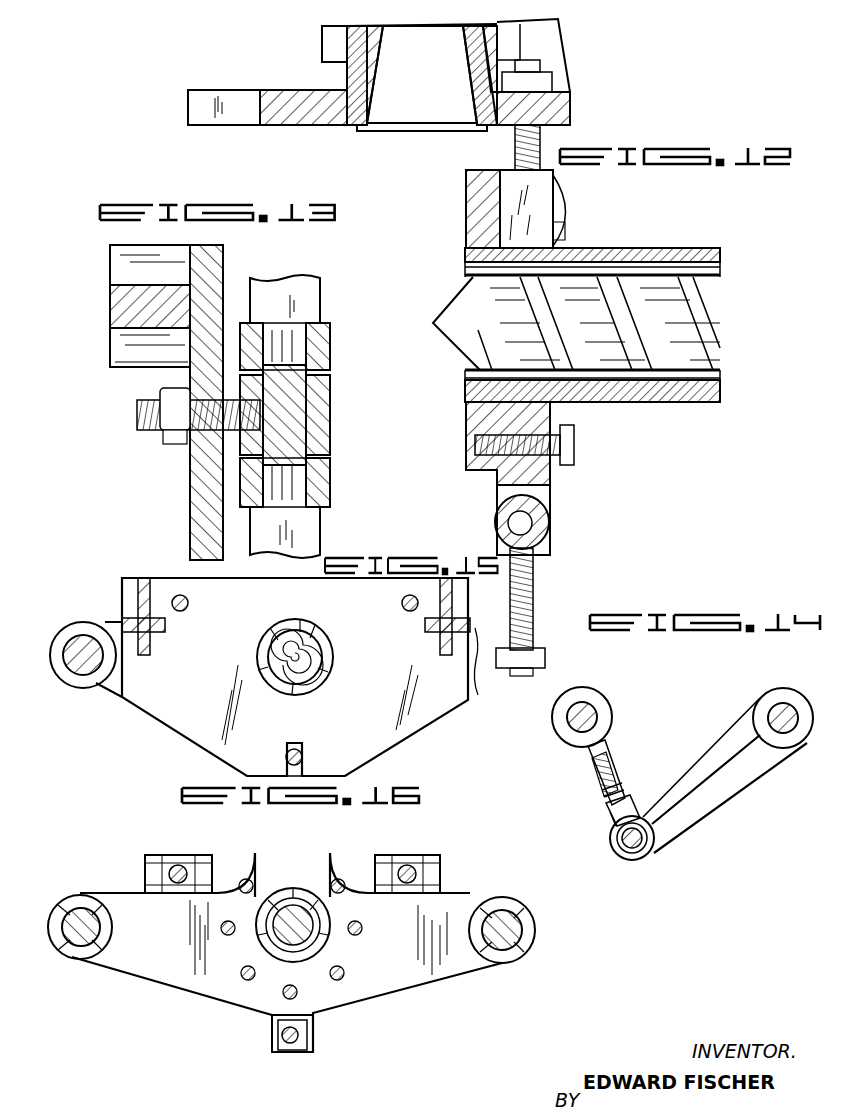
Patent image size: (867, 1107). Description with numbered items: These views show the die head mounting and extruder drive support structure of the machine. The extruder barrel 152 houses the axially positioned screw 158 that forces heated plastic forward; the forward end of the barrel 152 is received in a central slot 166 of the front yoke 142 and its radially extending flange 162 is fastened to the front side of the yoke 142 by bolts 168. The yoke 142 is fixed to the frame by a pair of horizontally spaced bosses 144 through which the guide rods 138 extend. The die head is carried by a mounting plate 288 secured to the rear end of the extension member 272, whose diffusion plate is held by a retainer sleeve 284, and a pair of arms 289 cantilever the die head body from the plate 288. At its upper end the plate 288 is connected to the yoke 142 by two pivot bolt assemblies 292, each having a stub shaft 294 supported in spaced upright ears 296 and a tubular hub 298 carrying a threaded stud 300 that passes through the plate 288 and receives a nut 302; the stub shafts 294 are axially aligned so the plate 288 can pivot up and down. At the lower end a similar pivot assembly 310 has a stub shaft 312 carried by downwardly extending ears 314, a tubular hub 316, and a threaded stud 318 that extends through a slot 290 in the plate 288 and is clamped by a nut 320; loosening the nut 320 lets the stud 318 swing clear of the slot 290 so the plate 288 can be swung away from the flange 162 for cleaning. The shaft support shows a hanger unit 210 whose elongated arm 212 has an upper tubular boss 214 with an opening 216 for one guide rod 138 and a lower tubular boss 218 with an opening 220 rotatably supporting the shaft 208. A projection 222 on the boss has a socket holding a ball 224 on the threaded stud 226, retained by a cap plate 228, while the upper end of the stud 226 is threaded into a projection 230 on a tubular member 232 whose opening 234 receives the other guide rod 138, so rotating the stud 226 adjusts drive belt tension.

In FIG. 15, the guide rods 138 is at (84, 662).
In FIG. 14, the guide rods 138 is at (573, 728).
In FIG. 16, the guide rods 138 is at (73, 925).
In FIG. 12, the front yoke 142 is at (540, 478).
In FIG. 16, the front yoke 142 is at (460, 968).
In FIG. 15, the bosses 144 is at (80, 630).
In FIG. 16, the bosses 144 is at (74, 952).
In FIG. 16, the barrel 152 is at (322, 935).
In FIG. 15, the screw 158 is at (283, 668).
In FIG. 12, the flange 162 is at (466, 212).
In FIG. 16, the central slot 166 is at (330, 838).
In FIG. 12, the bolts 168 is at (553, 240).
In FIG. 16, the bolts 168 is at (330, 885).
In FIG. 14, the shaft 208 is at (617, 839).
In FIG. 14, the hanger units 210 is at (771, 786).
In FIG. 14, the elongated arm 212 is at (708, 752).
In FIG. 14, the tubular boss 214 is at (771, 698).
In FIG. 14, the opening 216 is at (787, 708).
In FIG. 14, the tubular boss 218 is at (645, 860).
In FIG. 14, the opening 220 is at (635, 852).
In FIG. 14, the projection 222 is at (628, 808).
In FIG. 14, the ball 224 is at (612, 818).
In FIG. 14, the threaded stud 226 is at (613, 775).
In FIG. 14, the cap plate 228 is at (605, 792).
In FIG. 14, the projection 230 is at (603, 745).
In FIG. 14, the tubular member 232 is at (600, 700).
In FIG. 14, the opening 234 is at (585, 705).
In FIG. 15, the extension member 272 is at (333, 657).
In FIG. 12, the retainer sleeve 284 is at (368, 75).
In FIG. 15, the retainer sleeve 284 is at (312, 684).
In FIG. 12, the mounting plate 288 is at (570, 106).
In FIG. 13, the mounting plate 288 is at (212, 268).
In FIG. 15, the mounting plate 288 is at (405, 722).
In FIG. 13, the arms 289 is at (124, 275).
In FIG. 15, the arms 289 is at (152, 632).
In FIG. 12, the slot 290 is at (222, 122).
In FIG. 15, the slot 290 is at (298, 745).
In FIG. 13, the pivot bolt assemblies 292 is at (346, 407).
In FIG. 16, the pivot bolt assemblies 292 is at (184, 840).
In FIG. 13, the stub shaft 294 is at (290, 332).
In FIG. 13, the ears 296 is at (322, 350).
In FIG. 16, the ears 296 is at (150, 855).
In FIG. 13, the tubular hub 298 is at (322, 443).
In FIG. 12, the threaded stud 300 is at (540, 145).
In FIG. 13, the threaded stud 300 is at (147, 428).
In FIG. 15, the threaded stud 300 is at (189, 603).
In FIG. 13, the nuts 302 is at (170, 410).
In FIG. 16, the pivot assembly 310 is at (300, 1068).
In FIG. 16, the stub shaft 312 is at (276, 1050).
In FIG. 16, the ears 314 is at (276, 1035).
In FIG. 12, the tubular hub 316 is at (535, 525).
In FIG. 16, the tubular hub 316 is at (300, 1025).
In FIG. 12, the threaded stud 318 is at (533, 590).
In FIG. 15, the threaded stud 318 is at (303, 759).
In FIG. 16, the threaded stud 318 is at (300, 1040).
In FIG. 12, the nut 320 is at (545, 655).